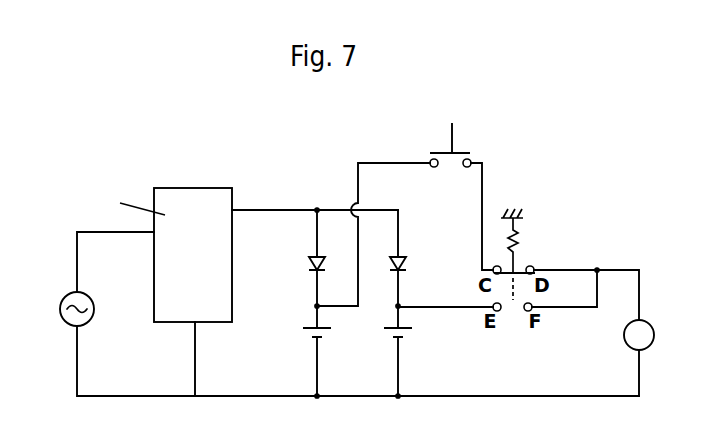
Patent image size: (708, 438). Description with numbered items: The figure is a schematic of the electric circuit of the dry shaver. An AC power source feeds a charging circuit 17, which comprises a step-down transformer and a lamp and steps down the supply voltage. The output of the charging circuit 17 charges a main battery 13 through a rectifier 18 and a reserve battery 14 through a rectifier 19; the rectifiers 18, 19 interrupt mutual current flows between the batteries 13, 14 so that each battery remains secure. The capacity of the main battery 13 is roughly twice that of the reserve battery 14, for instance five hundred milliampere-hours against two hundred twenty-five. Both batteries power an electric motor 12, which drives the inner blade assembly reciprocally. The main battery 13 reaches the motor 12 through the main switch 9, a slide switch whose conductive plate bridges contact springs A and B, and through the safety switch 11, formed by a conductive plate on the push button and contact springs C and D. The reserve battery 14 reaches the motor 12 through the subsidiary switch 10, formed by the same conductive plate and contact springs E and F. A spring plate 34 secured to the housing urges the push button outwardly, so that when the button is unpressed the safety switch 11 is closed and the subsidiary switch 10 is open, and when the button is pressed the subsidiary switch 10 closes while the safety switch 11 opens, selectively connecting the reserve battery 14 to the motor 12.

The charging circuit 17 is at (198, 193).
The rectifier 18 is at (311, 266).
The rectifier 19 is at (408, 265).
The main battery 13 is at (301, 330).
The reserve battery 14 is at (387, 329).
The main switch 9 is at (459, 150).
The spring plate 34 is at (537, 228).
The subsidiary switch 10 is at (512, 308).
The safety switch 11 is at (521, 272).
The electric motor 12 is at (650, 342).